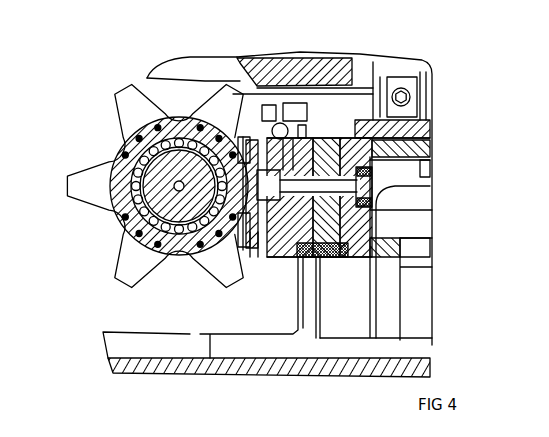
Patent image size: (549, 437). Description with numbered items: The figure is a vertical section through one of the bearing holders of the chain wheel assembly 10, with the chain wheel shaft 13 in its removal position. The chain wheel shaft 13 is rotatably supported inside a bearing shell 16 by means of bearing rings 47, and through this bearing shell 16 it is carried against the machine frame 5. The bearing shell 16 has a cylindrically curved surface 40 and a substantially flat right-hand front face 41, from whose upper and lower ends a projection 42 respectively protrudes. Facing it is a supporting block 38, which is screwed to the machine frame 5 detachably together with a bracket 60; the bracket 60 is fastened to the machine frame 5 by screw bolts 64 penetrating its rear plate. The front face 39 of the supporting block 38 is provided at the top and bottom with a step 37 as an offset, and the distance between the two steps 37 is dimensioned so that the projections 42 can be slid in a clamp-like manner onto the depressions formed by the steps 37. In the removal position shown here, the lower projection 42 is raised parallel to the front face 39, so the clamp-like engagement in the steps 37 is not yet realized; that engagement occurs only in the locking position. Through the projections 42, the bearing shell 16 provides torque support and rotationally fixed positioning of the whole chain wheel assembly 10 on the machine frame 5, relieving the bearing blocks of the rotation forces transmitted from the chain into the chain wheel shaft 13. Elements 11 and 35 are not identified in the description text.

The machine frame 5 is at (444, 140).
The chain wheel assembly 10 is at (80, 100).
The sprocket 11 is at (85, 165).
The chain wheel shaft 13 is at (130, 208).
The bearing shell 16 is at (210, 250).
The cover plate 35 is at (272, 66).
The step 37 is at (307, 110).
The supporting block 38 is at (283, 238).
The front face 39 is at (294, 121).
The cylindrically curved surface 40 is at (118, 150).
The front face 41 is at (266, 262).
The projection 42 is at (250, 138).
The bearing ring 47 is at (180, 233).
The bracket 60 is at (272, 265).
The screw bolt 64 is at (356, 203).